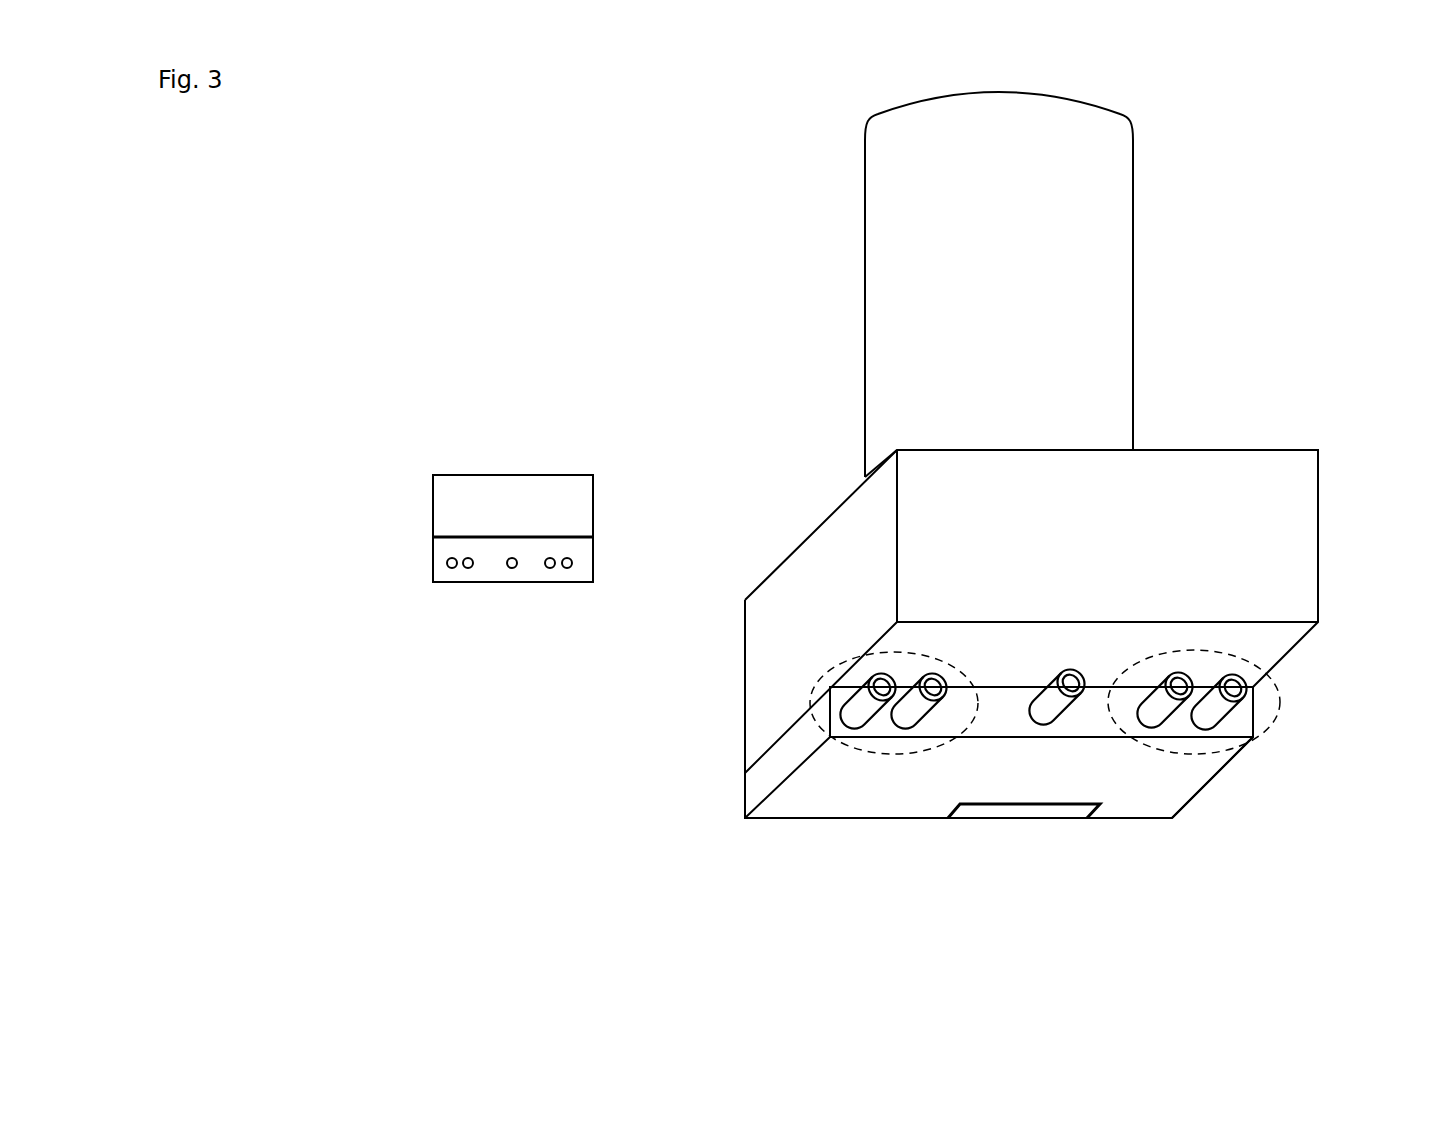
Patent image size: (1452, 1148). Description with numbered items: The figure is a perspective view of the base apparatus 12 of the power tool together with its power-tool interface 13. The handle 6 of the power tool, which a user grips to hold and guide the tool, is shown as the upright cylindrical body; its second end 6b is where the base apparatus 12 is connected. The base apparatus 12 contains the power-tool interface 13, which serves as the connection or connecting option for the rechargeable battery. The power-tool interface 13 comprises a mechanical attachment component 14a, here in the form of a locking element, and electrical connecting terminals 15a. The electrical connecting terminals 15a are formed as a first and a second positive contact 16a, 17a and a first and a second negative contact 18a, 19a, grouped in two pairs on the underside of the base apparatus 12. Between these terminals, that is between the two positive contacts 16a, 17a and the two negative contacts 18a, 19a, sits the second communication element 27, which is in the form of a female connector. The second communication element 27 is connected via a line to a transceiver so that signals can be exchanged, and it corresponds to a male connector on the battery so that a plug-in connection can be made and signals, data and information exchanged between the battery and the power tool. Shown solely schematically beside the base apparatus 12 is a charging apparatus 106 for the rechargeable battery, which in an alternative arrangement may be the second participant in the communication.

The handle 6 is at (1090, 218).
The second end of the handle 6b is at (878, 457).
The base apparatus 12 is at (838, 542).
The power-tool interface 13 is at (782, 763).
The mechanical attachment component 14a is at (962, 815).
The electrical connecting terminals 15a is at (1185, 761).
The first positive contact 16a is at (1215, 708).
The second positive contact 17a is at (1167, 707).
The first negative contact 18a is at (917, 708).
The second negative contact 19a is at (858, 705).
The second communication element 27 is at (1038, 692).
The charging apparatus 106 is at (414, 600).